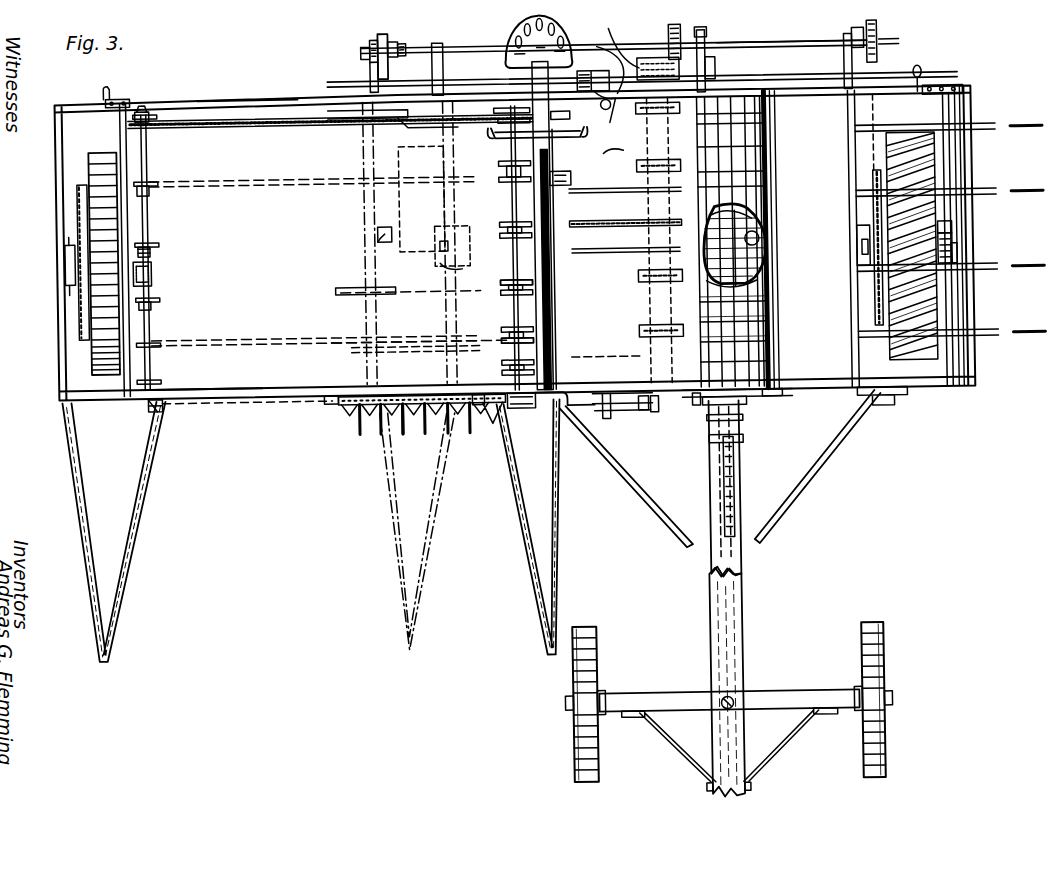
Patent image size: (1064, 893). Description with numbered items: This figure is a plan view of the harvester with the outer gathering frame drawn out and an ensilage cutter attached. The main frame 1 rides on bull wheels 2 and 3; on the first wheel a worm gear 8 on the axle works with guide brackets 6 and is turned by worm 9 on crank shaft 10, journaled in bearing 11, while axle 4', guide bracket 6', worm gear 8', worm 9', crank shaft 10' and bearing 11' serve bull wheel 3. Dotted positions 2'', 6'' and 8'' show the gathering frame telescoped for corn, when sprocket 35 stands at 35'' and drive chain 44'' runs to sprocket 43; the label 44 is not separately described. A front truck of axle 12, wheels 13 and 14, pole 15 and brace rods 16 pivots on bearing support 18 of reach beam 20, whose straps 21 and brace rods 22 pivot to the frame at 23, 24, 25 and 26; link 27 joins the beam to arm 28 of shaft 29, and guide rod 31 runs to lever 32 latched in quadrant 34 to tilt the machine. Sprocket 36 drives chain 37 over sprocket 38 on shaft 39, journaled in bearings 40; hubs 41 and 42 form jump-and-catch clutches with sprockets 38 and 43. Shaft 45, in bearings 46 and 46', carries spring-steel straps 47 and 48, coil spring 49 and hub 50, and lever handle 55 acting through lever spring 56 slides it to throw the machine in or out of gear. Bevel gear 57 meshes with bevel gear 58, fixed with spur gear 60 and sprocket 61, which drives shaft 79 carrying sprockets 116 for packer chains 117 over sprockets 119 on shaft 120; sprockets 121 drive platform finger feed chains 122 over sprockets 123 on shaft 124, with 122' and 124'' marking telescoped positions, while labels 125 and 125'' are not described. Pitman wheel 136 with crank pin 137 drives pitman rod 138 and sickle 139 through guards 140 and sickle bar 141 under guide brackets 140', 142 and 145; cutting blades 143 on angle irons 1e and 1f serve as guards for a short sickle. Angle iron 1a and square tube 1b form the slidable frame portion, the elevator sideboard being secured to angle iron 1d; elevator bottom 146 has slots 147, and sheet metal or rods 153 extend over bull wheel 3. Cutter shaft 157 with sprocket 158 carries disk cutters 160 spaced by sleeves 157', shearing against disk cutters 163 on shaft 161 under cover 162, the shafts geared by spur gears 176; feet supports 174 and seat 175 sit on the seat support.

The main frame 1 is at (970, 365).
The angle iron 1a is at (228, 98).
The square tube 1b is at (222, 393).
The angle iron 1d is at (850, 105).
The angle iron 1e is at (529, 527).
The angle iron 1f is at (260, 529).
The bull wheel 2 is at (75, 251).
The bull wheel (telescoped position) 2'' is at (409, 244).
The bull wheel 3 is at (940, 300).
The short axle 4' is at (844, 244).
The guide brackets 6 is at (255, 263).
The guide bracket 6' is at (908, 255).
The guide bracket (telescoped position) 6'' is at (360, 232).
The worm gear 8 is at (158, 250).
The worm gear 8' is at (968, 246).
The worm gear (telescoped position) 8'' is at (464, 245).
The worm 9 is at (158, 241).
The worm 9' is at (967, 218).
The crank shaft 10 is at (166, 252).
The crank shaft 10' is at (950, 238).
The bearing 11 is at (103, 113).
The bearing 11' is at (964, 90).
The front axle 12 is at (642, 694).
The front wheel 13 is at (574, 728).
The front wheel 14 is at (877, 714).
The pole 15 is at (745, 780).
The brace rods 16 is at (672, 752).
The bearing support 18 is at (726, 704).
The reach beam 20 is at (730, 640).
The metallic straps 21 is at (758, 430).
The brace rods 22 is at (630, 485).
The pivotal connection 23 is at (892, 411).
The pivotal connection 24 is at (744, 402).
The pivotal connection 25 is at (692, 410).
The pivotal connection 26 is at (580, 393).
The link 27 is at (732, 490).
The forwardly projecting arm 28 is at (742, 446).
The shaft 29 is at (617, 418).
The guide rod 31 is at (560, 270).
The lever 32 is at (560, 210).
The latch segment 34 is at (572, 182).
The large sprocket 35 is at (56, 265).
The large sprocket (telescoped position) 35'' is at (355, 245).
The large sprocket 36 is at (850, 312).
The endless chain 37 is at (874, 150).
The sprocket 38 is at (882, 36).
The shaft 39 is at (770, 50).
The bearings 40 is at (448, 60).
The hub 41 is at (882, 42).
The hub 42 is at (395, 42).
The sprocket 43 is at (380, 40).
The shaft end 44 is at (932, 25).
The endless drive chain 44'' is at (355, 251).
The shaft 45 is at (490, 46).
The bearings 46 is at (640, 66).
The bearing support 46' is at (602, 103).
The spring steel strap 47 is at (925, 75).
The spring steel strap 48 is at (364, 60).
The coil spring 49 is at (585, 69).
The hub 50 is at (608, 68).
The lever handle 55 is at (565, 116).
The lever spring 56 is at (608, 63).
The beveled gear 57 is at (702, 40).
The beveled gear 58 is at (672, 38).
The spur gear 60 is at (606, 114).
The sprocket 61 is at (623, 41).
The shaft 79 is at (648, 130).
The sprockets 116 is at (638, 333).
The packer sprocket chains 117 is at (620, 226).
The sprockets 119 is at (507, 248).
The shaft 120 is at (507, 292).
The sprockets 121 is at (508, 342).
The platform finger feed chains 122 is at (312, 237).
The feed chains (telescoped position) 122' is at (407, 285).
The sprockets 123 is at (158, 292).
The shaft 124 is at (314, 326).
The shaft (telescoped position) 124'' is at (421, 320).
The gear 125 is at (158, 95).
The rack 125'' is at (393, 128).
The pitman wheel 136 is at (642, 416).
The crank pin 137 is at (661, 437).
The pitman rod 138 is at (590, 414).
The sickle 139 is at (358, 432).
The guards 140 is at (402, 447).
The guide bracket 140' is at (416, 438).
The sickle bar 141 is at (326, 404).
The sickle head bracket 142 is at (522, 410).
The cutting blades 143 is at (158, 406).
The sickle guide bracket 145 is at (146, 402).
The elevator bottom 146 is at (752, 126).
The slots 147 is at (745, 300).
The sheet metal or rods 153 is at (882, 133).
The shaft 157 is at (688, 48).
The thimbles or sleeves 157' is at (762, 271).
The sprocket 158 is at (725, 62).
The disk cutters 160 is at (762, 252).
The shaft 161 is at (758, 222).
The ensilage cutter cover 162 is at (760, 208).
The disk cutters 163 is at (760, 240).
The feet supports 174 is at (498, 139).
The seat 175 is at (572, 45).
The spur gears 176 is at (801, 399).